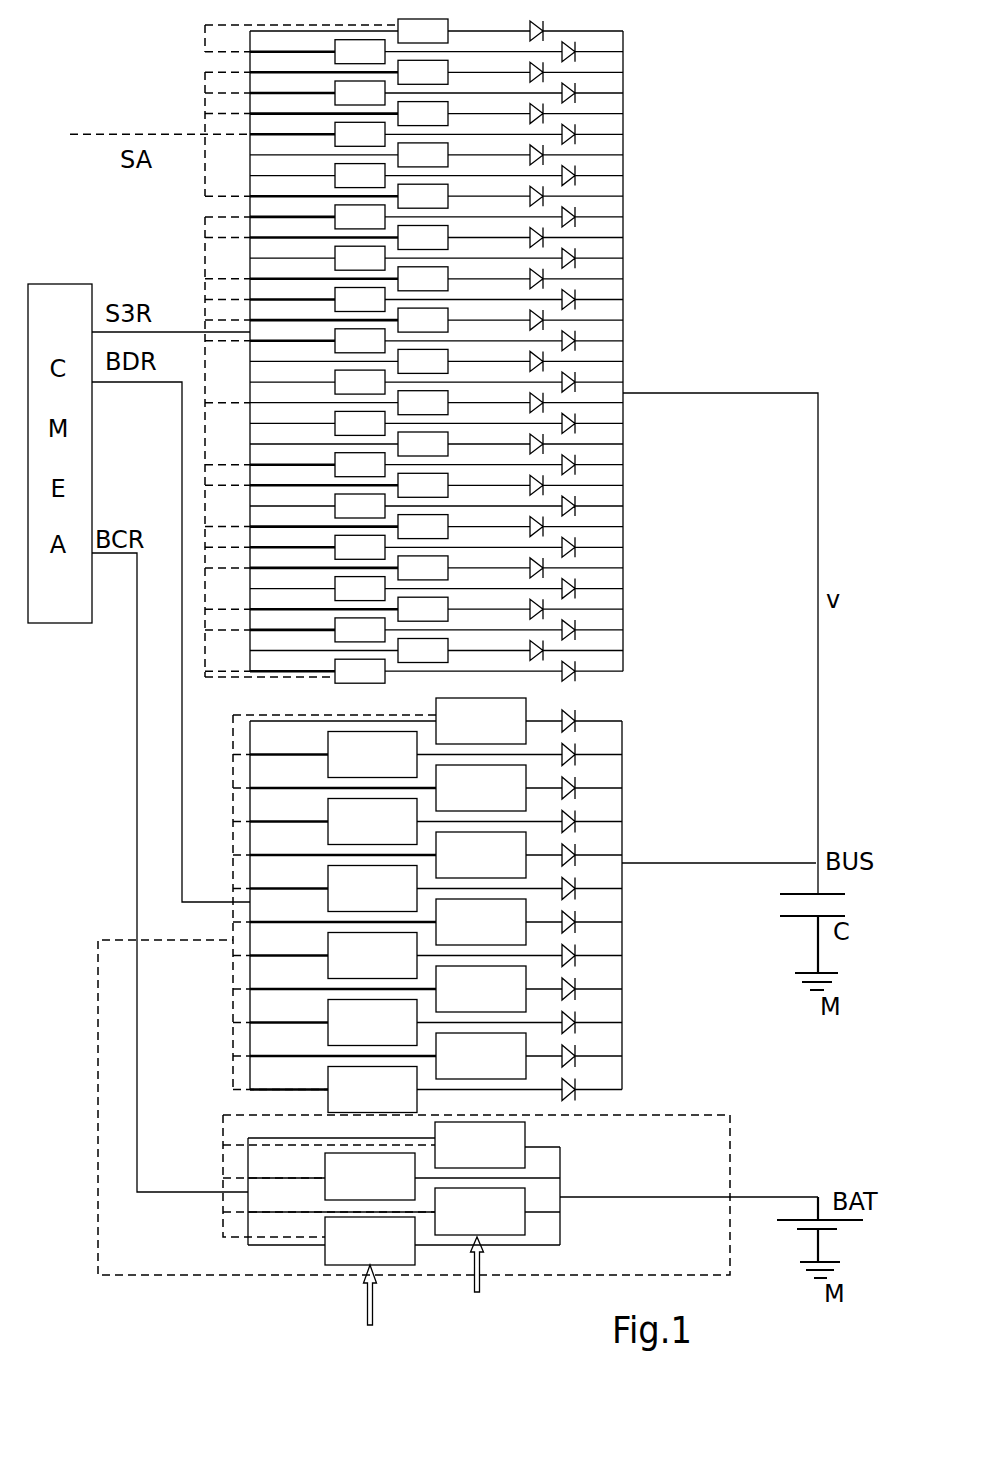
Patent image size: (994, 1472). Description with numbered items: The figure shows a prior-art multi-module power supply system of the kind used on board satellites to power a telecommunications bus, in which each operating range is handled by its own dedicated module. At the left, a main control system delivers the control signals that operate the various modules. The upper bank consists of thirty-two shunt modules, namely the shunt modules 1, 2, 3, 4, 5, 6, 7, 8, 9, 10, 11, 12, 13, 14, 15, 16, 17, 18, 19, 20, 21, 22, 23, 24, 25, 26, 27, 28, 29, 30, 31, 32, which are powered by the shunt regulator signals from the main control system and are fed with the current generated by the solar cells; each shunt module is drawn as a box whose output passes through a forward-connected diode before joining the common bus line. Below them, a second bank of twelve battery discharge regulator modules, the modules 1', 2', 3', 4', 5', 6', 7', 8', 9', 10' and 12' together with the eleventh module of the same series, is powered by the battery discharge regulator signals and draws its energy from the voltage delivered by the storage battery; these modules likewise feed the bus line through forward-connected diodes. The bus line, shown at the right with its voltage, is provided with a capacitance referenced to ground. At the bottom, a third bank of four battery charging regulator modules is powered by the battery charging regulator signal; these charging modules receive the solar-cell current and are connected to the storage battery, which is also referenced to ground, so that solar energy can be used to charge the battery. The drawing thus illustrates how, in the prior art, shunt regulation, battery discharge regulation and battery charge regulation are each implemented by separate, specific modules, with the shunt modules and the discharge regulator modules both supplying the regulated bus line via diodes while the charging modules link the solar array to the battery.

The shunt module 1 is at (436, 31).
The shunt module 2 is at (436, 52).
The shunt module 3 is at (436, 72).
The shunt module 4 is at (436, 93).
The shunt module 5 is at (436, 114).
The shunt module 6 is at (436, 134).
The shunt module 7 is at (436, 155).
The shunt module 8 is at (436, 176).
The shunt module 9 is at (436, 196).
The shunt module 10 is at (436, 217).
The shunt module 11 is at (436, 238).
The shunt module 12 is at (436, 258).
The shunt module 13 is at (436, 279).
The shunt module 14 is at (436, 300).
The shunt module 15 is at (436, 320).
The shunt module 16 is at (436, 341).
The shunt module 17 is at (436, 361).
The shunt module 18 is at (436, 382).
The shunt module 19 is at (436, 403).
The shunt module 20 is at (436, 423).
The shunt module 21 is at (436, 444).
The shunt module 22 is at (436, 465).
The shunt module 23 is at (436, 485).
The shunt module 24 is at (436, 506).
The shunt module 25 is at (436, 527).
The shunt module 26 is at (436, 547).
The shunt module 27 is at (436, 568).
The shunt module 28 is at (436, 589).
The shunt module 29 is at (436, 609).
The shunt module 30 is at (436, 630).
The shunt module 31 is at (436, 651).
The shunt module 32 is at (436, 671).
The battery discharge regulator module 1' is at (436, 721).
The battery discharge regulator module 2' is at (436, 755).
The battery discharge regulator module 3' is at (436, 788).
The battery discharge regulator module 4' is at (436, 822).
The battery discharge regulator module 5' is at (436, 855).
The battery discharge regulator module 6' is at (436, 889).
The battery discharge regulator module 7' is at (436, 922).
The battery discharge regulator module 8' is at (436, 956).
The battery discharge regulator module 9' is at (436, 989).
The battery discharge regulator module 10' is at (436, 1023).
The battery discharge regulator module 12' is at (436, 1090).